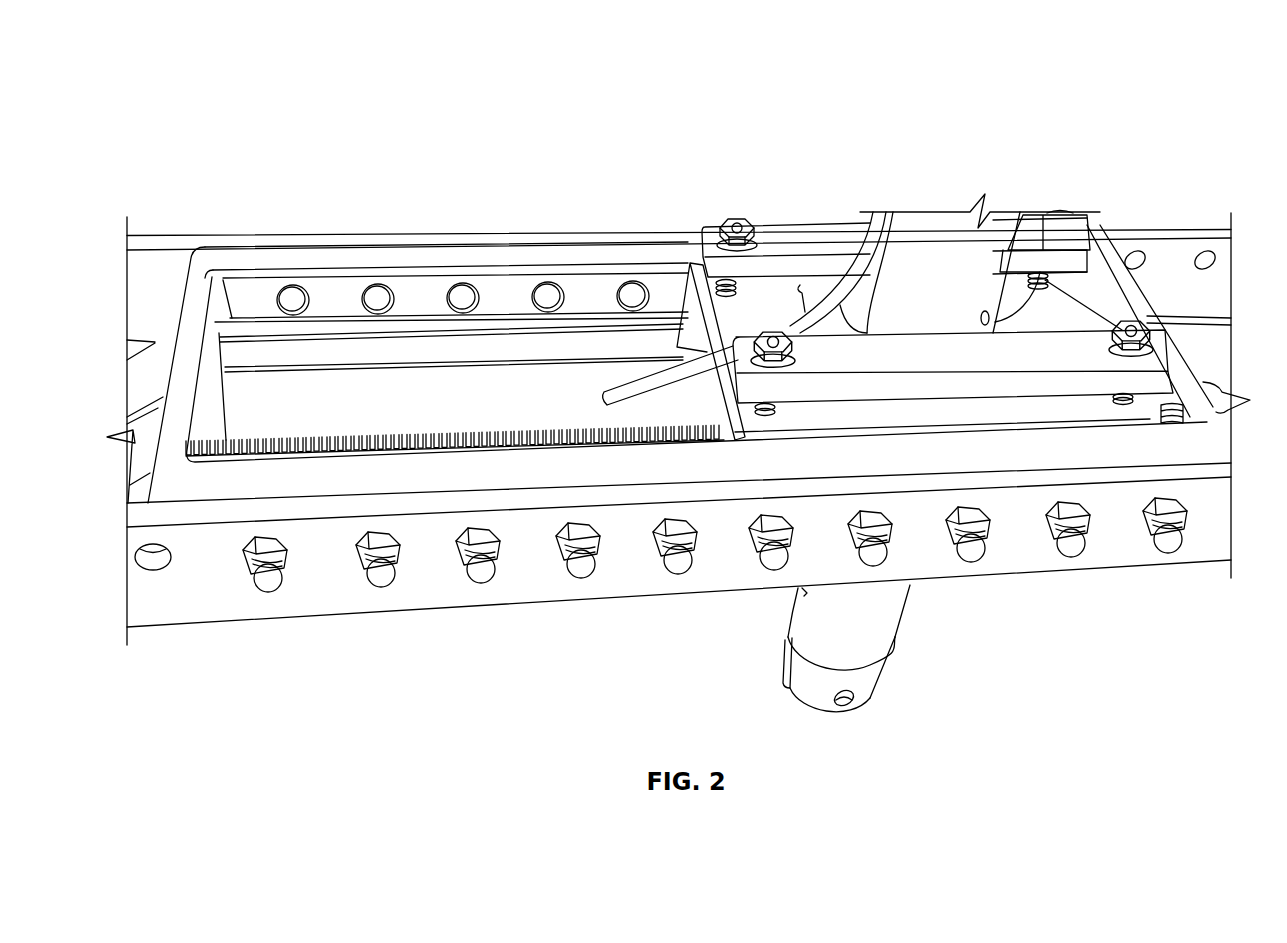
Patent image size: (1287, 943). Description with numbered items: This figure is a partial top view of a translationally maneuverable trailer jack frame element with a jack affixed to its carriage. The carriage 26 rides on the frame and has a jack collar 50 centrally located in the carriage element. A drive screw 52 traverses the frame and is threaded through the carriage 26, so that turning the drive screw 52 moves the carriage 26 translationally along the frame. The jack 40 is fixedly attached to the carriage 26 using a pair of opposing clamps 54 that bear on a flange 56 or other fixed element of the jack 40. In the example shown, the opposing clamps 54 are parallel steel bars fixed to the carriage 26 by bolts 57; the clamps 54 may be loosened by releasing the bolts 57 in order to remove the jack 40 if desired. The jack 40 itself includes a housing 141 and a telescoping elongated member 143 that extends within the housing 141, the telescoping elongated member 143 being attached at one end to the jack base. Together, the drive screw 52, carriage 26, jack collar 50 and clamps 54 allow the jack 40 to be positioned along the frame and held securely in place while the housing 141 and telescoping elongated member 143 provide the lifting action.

The carriage 26 is at (774, 295).
The jack 40 is at (905, 603).
The jack collar 50 is at (1038, 272).
The drive screw 52 is at (325, 452).
The opposing clamps 54 is at (780, 240).
The flange 56 is at (803, 288).
The bolts 57 is at (1133, 328).
The housing 141 is at (906, 608).
The telescoping elongated member 143 is at (868, 692).